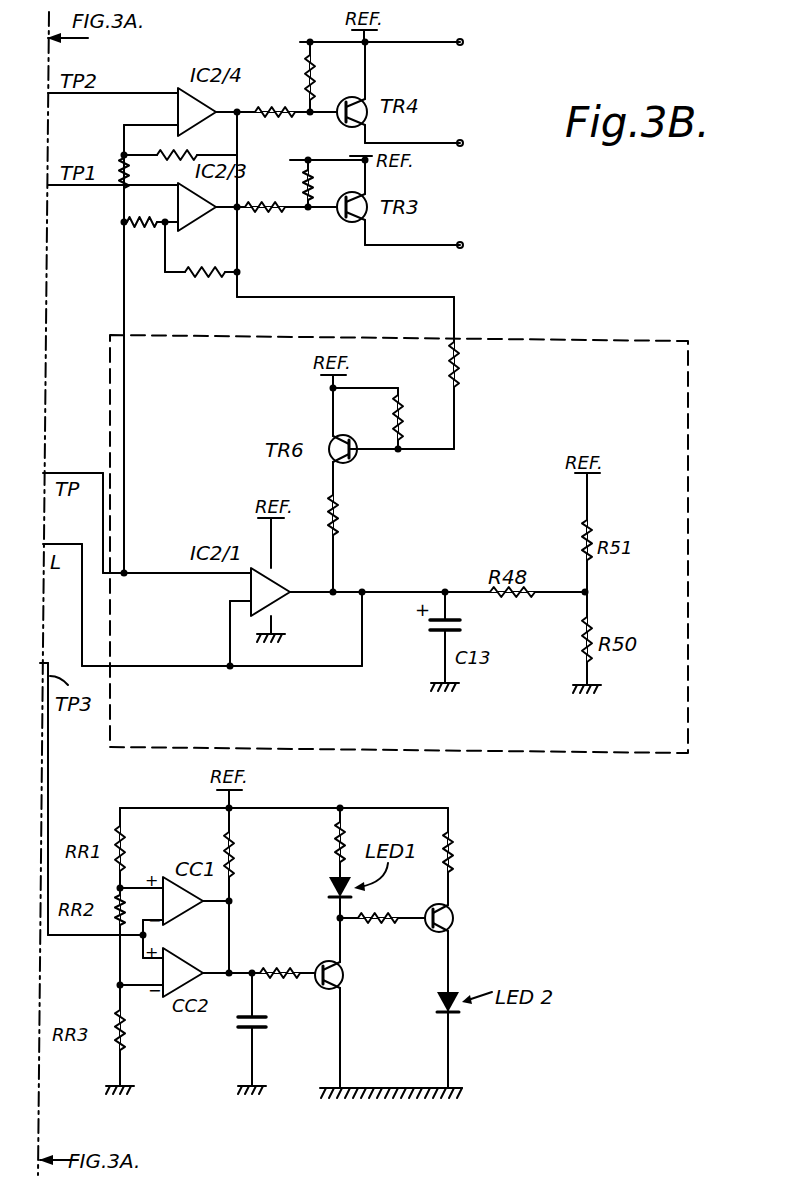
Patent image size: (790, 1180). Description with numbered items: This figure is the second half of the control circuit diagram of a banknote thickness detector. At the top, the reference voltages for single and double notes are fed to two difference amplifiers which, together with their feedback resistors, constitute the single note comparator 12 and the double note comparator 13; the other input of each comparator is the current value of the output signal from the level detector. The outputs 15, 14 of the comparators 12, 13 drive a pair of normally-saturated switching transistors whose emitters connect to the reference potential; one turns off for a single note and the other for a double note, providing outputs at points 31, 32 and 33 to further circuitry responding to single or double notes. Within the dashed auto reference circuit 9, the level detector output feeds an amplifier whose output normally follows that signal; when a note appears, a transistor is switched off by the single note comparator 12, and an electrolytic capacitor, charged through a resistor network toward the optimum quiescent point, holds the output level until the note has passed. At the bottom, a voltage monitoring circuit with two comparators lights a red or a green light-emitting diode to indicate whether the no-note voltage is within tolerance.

The auto reference circuit 9 is at (598, 341).
The single note comparator 12 is at (150, 205).
The double note comparator 13 is at (170, 90).
The output of double note comparator 14 is at (245, 116).
The output of single note comparator 15 is at (245, 212).
The output point 31 is at (431, 246).
The output point 32 is at (431, 144).
The output point 33 is at (399, 43).